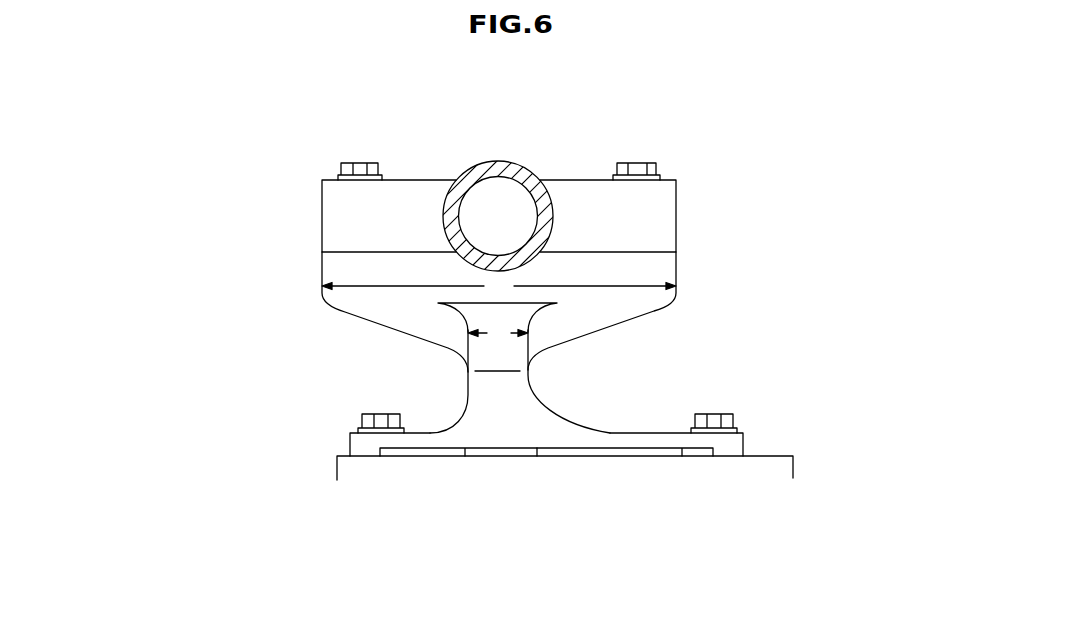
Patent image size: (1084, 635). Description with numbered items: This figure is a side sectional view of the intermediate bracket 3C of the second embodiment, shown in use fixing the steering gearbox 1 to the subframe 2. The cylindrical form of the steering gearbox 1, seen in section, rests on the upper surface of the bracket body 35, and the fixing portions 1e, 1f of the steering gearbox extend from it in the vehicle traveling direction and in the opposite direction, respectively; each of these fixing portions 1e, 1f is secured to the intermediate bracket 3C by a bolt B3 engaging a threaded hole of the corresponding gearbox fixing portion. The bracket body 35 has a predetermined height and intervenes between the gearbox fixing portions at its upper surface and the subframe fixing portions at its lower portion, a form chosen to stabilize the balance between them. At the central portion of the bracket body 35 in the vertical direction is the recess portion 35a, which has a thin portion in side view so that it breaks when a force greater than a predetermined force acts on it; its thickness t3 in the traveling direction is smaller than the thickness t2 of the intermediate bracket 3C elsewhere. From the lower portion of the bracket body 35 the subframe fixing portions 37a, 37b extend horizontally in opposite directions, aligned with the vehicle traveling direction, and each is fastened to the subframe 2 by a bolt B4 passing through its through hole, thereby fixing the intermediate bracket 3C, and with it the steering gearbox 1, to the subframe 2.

The steering gearbox 1 is at (505, 179).
The fixing portion 1e is at (333, 221).
The fixing portion 1f is at (668, 217).
The subframe 2 is at (540, 515).
The intermediate bracket 3C is at (426, 354).
The bracket body 35 is at (543, 312).
The recess portion 35a is at (543, 377).
The subframe fixing portion 37a is at (380, 456).
The subframe fixing portion 37b is at (713, 450).
The bolt B3 is at (360, 167).
The bolt B4 is at (382, 420).
The thickness t2 is at (499, 287).
The thickness t3 is at (498, 334).